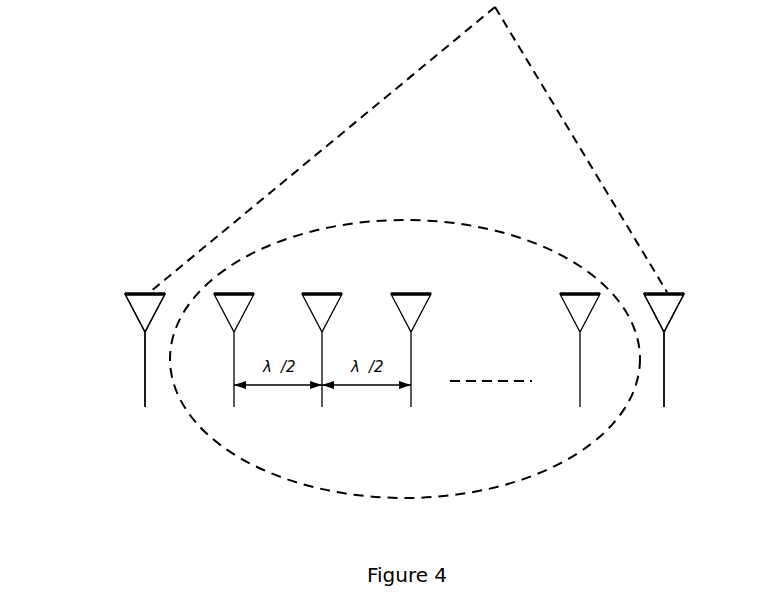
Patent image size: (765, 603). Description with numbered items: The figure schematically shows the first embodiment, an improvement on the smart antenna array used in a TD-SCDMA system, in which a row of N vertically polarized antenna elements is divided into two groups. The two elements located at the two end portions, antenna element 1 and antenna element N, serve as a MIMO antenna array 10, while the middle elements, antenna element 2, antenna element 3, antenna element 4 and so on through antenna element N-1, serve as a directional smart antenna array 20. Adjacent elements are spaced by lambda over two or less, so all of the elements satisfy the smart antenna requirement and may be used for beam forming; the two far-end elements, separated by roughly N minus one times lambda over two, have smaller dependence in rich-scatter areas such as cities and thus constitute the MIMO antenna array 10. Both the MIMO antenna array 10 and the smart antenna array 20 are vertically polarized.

The MIMO antenna array 10 is at (137, 288).
The smart antenna array 20 is at (520, 466).
The antenna element 1 is at (145, 367).
The antenna element 2 is at (234, 367).
The antenna element 3 is at (322, 367).
The antenna element 4 is at (411, 367).
The antenna element N-1 is at (580, 367).
The antenna element N is at (664, 367).